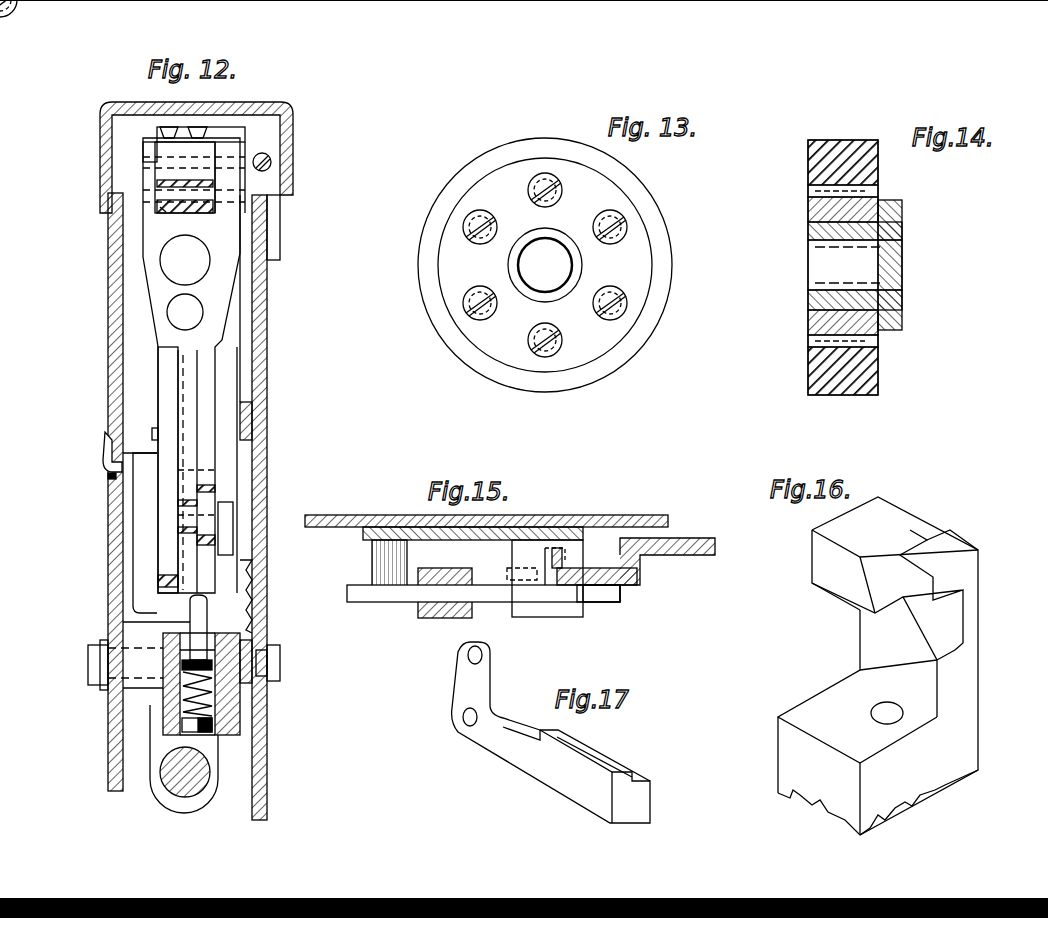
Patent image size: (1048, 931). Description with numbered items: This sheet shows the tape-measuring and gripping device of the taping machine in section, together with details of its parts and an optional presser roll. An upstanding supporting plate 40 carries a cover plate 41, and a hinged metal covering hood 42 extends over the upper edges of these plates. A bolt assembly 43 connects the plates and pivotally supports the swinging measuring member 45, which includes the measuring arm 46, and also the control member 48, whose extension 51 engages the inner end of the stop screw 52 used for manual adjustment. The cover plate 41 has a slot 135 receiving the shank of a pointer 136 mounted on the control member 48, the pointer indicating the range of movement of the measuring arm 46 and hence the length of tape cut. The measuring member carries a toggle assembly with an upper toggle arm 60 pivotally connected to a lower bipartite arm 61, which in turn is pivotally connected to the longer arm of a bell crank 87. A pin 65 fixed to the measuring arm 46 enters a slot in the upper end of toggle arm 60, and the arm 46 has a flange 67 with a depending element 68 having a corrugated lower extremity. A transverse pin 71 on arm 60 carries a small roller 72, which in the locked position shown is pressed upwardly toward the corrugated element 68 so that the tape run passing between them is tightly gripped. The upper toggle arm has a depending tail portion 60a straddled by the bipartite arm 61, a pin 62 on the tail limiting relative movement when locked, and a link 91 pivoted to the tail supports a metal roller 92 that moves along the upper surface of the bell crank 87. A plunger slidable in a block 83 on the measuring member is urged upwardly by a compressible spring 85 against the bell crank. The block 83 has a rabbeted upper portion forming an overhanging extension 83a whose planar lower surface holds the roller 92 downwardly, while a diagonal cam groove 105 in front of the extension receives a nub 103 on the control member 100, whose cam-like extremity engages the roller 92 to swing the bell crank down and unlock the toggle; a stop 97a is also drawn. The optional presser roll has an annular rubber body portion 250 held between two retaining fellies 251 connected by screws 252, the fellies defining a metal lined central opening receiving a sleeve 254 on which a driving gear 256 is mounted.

In FIG. 12, the supporting plate 40 is at (262, 395).
In FIG. 15, the supporting plate 40 is at (388, 495).
In FIG. 12, the cover plate 41 is at (115, 363).
In FIG. 12, the covering hood 42 is at (290, 160).
In FIG. 12, the bolt assembly 43 is at (92, 670).
In FIG. 15, the measuring member 45 is at (545, 527).
In FIG. 12, the measuring arm 46 is at (246, 372).
In FIG. 12, the control member 48 is at (125, 545).
In FIG. 12, the extension 51 is at (214, 770).
In FIG. 12, the stop screw 52 is at (168, 790).
In FIG. 12, the upper toggle arm 60 is at (212, 323).
In FIG. 12, the depending tail portion 60a is at (188, 410).
In FIG. 12, the bipartite arm 61 is at (206, 435).
In FIG. 15, the bipartite arm 61 is at (425, 578).
In FIG. 12, the pin 62 is at (152, 428).
In FIG. 12, the pin 65 is at (148, 158).
In FIG. 12, the flange 67 is at (185, 130).
In FIG. 12, the depending element 68 is at (165, 175).
In FIG. 12, the pin 71 is at (226, 205).
In FIG. 12, the roller 72 is at (163, 210).
In FIG. 12, the block 83 is at (233, 718).
In FIG. 15, the block 83 is at (552, 610).
In FIG. 16, the block 83 is at (770, 706).
In FIG. 16, the overhanging extension 83a is at (825, 573).
In FIG. 12, the compressible spring 85 is at (183, 705).
In FIG. 12, the bell crank 87 is at (175, 590).
In FIG. 15, the bell crank 87 is at (605, 606).
In FIG. 17, the bell crank 87 is at (641, 759).
In FIG. 12, the link 91 is at (178, 513).
In FIG. 15, the link 91 is at (493, 600).
In FIG. 12, the metal roller 92 is at (208, 493).
In FIG. 15, the metal roller 92 is at (508, 572).
In FIG. 12, the stop 97a is at (252, 420).
In FIG. 15, the control member 100 is at (690, 537).
In FIG. 15, the nub 103 is at (546, 552).
In FIG. 12, the cam groove 105 is at (225, 537).
In FIG. 15, the cam groove 105 is at (595, 527).
In FIG. 16, the cam groove 105 is at (930, 540).
In FIG. 12, the slot 135 is at (112, 478).
In FIG. 12, the pointer 136 is at (103, 455).
In FIG. 13, the rubber body portion 250 is at (612, 366).
In FIG. 14, the rubber body portion 250 is at (850, 394).
In FIG. 13, the retaining fellies 251 is at (618, 320).
In FIG. 14, the retaining fellies 251 is at (880, 175).
In FIG. 13, the screws 252 is at (490, 230).
In FIG. 14, the screws 252 is at (810, 190).
In FIG. 14, the sleeve 254 is at (808, 236).
In FIG. 14, the driving gear 256 is at (902, 218).